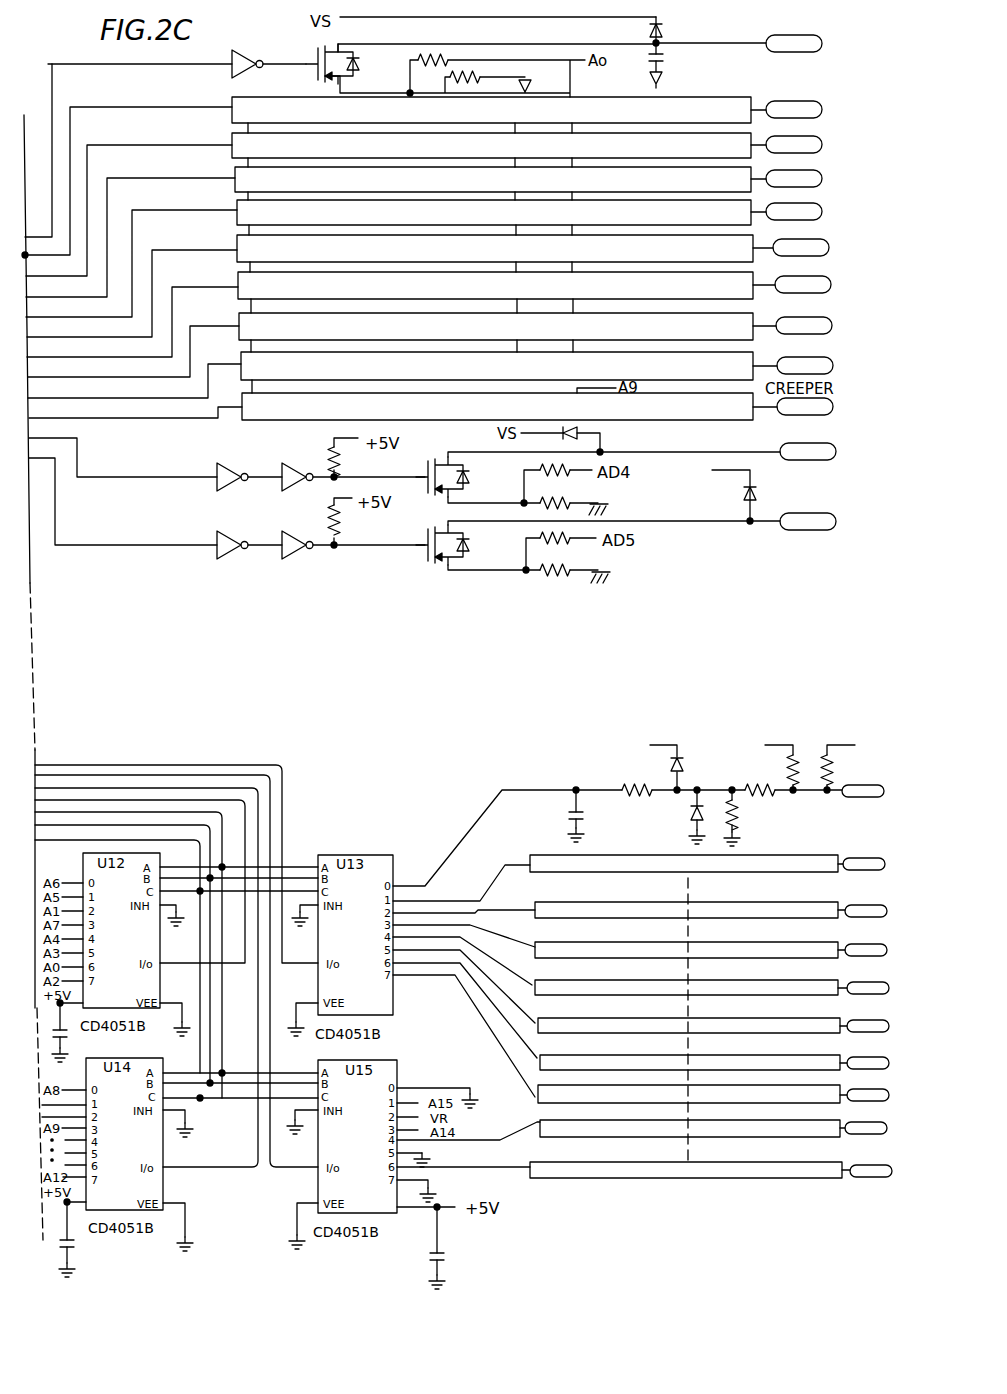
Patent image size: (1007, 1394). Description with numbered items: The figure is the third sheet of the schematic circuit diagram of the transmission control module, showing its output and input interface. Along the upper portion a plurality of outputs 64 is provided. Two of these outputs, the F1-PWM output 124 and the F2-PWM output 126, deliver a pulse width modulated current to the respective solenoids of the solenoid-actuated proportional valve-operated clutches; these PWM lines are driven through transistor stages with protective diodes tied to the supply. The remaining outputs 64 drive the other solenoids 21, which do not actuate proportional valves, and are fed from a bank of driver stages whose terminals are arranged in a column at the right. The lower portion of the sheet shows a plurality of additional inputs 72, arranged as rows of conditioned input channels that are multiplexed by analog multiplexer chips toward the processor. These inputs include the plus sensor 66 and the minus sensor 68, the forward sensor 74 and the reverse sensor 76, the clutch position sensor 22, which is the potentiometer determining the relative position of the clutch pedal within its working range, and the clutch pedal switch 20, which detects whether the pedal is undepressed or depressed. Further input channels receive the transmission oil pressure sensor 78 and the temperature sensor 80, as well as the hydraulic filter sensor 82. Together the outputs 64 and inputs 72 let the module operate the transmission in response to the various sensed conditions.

The outputs 64 is at (784, 29).
The F1-PWM output 124 is at (822, 461).
The F2-PWM output 126 is at (822, 531).
The minus sensor 68 is at (843, 798).
The reverse sensor 76 is at (876, 858).
The forward sensor 74 is at (840, 906).
The plus sensor 66 is at (851, 943).
The clutch position sensor 22 is at (845, 988).
The other solenoids 21 is at (845, 1025).
The transmission oil pressure sensor 78 is at (845, 1062).
The clutch pedal switch 20 is at (845, 1096).
The temperature sensor 80 is at (840, 1124).
The additional inputs 72 is at (850, 1183).
The hydraulic filter sensor 82 is at (881, 1178).